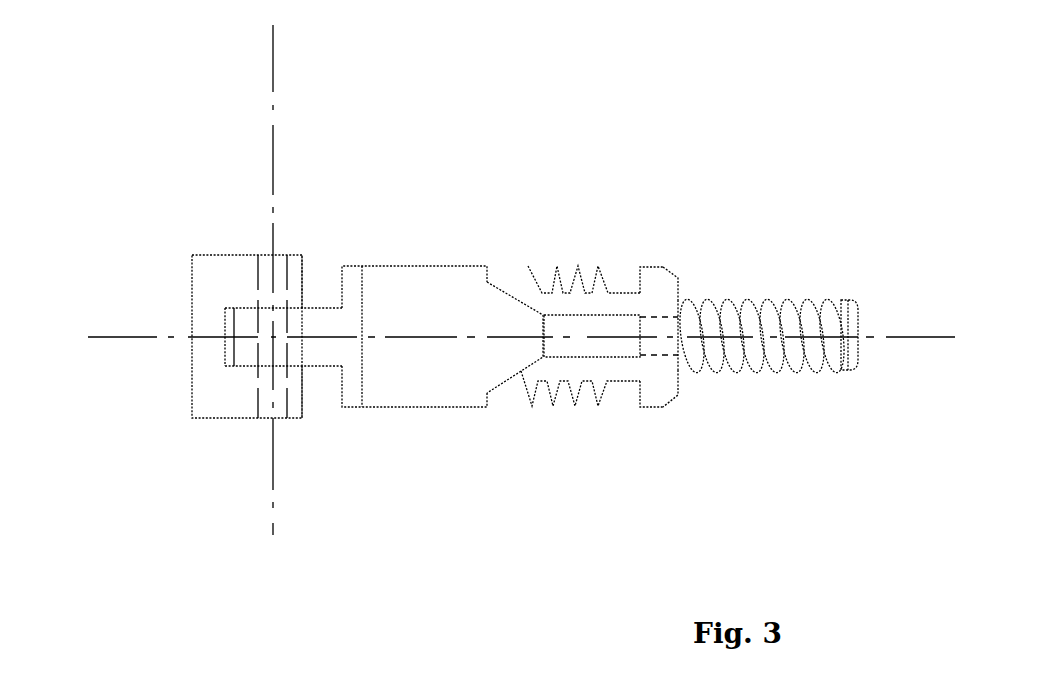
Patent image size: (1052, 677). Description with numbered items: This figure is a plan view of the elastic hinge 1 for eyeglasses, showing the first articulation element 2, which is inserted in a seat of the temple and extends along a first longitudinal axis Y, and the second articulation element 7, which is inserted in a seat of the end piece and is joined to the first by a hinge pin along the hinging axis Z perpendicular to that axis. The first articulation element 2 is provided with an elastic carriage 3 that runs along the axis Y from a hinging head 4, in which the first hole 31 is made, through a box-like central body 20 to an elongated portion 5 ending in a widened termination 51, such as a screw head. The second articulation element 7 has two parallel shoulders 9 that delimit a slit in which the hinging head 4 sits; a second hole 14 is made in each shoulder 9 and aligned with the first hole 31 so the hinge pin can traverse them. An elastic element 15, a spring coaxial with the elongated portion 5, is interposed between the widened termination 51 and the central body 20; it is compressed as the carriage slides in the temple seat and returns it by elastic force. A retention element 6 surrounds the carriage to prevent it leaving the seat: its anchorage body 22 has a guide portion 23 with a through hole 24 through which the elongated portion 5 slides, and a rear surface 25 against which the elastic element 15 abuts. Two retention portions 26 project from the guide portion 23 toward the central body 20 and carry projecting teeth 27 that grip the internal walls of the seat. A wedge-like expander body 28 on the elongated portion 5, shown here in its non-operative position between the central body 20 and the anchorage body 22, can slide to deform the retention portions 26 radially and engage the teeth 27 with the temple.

The elastic hinge 1 is at (100, 98).
The first articulation element 2 is at (491, 133).
The elastic carriage 3 is at (440, 440).
The hinging head 4 is at (325, 352).
The elongated portion 5 is at (608, 337).
The retention element 6 is at (675, 468).
The second articulation element 7 is at (248, 178).
The shoulders 9 is at (302, 268).
The second hole 14 is at (258, 283).
The elastic element 15 is at (784, 226).
The central body 20 is at (441, 283).
The anchorage body 22 is at (640, 422).
The guide portion 23 is at (665, 392).
The through hole 24 is at (663, 357).
The rear surface 25 is at (680, 293).
The retention portions 26 is at (626, 372).
The projecting tooth 27 is at (598, 266).
The expander body 28 is at (503, 358).
The first hole 31 is at (258, 357).
The widened termination 51 is at (862, 318).